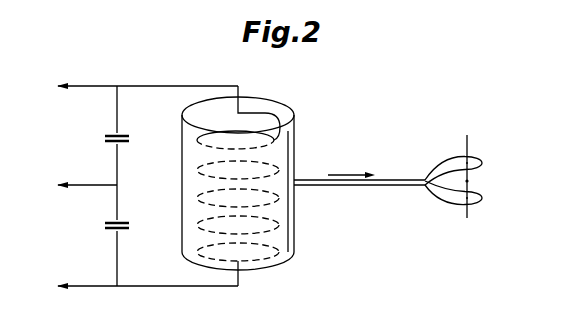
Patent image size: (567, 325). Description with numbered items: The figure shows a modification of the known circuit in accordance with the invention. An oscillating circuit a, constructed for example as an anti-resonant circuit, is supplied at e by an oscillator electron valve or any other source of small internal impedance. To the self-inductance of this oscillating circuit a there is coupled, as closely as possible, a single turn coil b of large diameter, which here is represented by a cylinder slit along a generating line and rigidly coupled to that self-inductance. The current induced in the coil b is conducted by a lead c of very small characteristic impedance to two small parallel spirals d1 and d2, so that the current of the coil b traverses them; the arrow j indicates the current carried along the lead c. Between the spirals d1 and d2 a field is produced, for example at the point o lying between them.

The supply terminals e is at (139, 187).
The oscillating circuit a is at (196, 232).
The single turn coil b is at (278, 105).
The lead c is at (359, 192).
The beam / current direction j is at (356, 167).
The first small parallel spiral d1 is at (464, 176).
The second small parallel spiral d2 is at (464, 196).
The point between the coils o is at (473, 182).